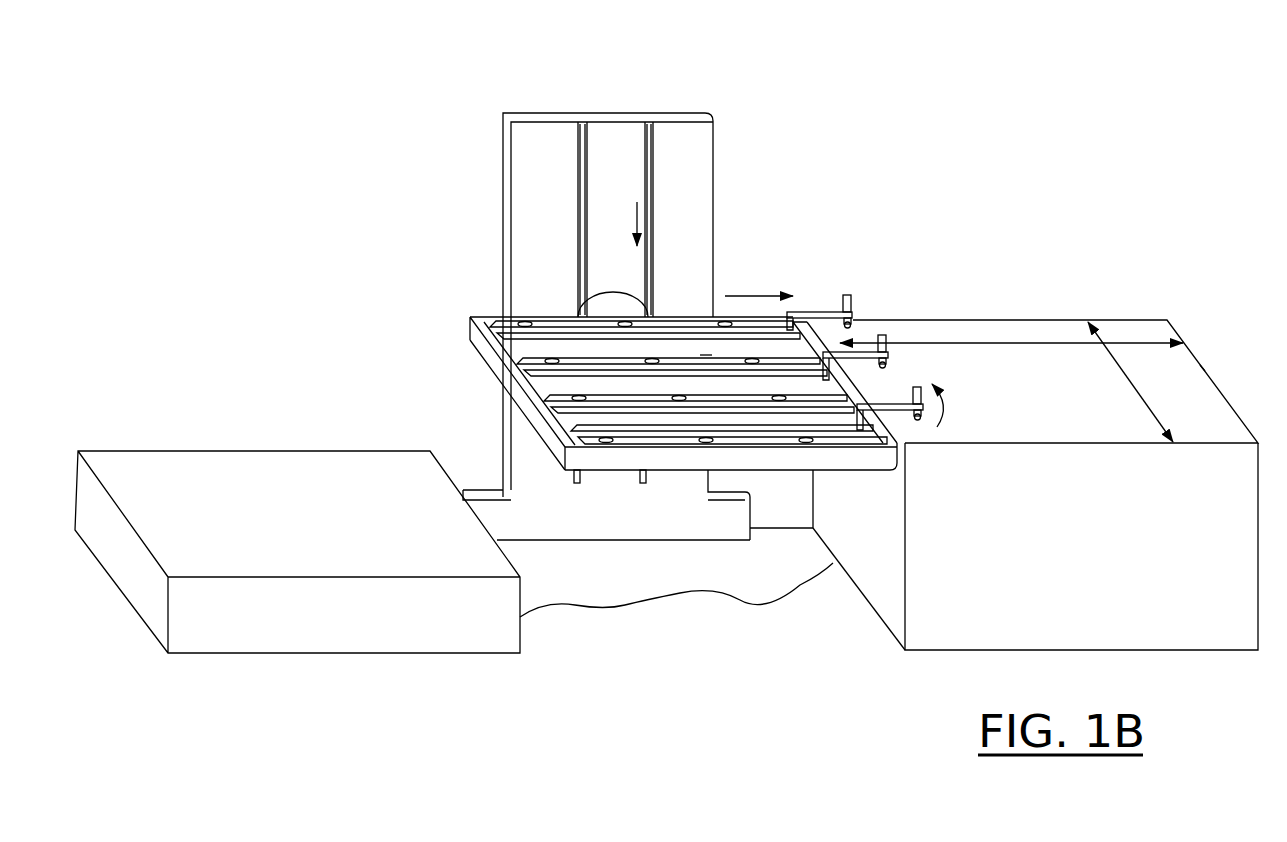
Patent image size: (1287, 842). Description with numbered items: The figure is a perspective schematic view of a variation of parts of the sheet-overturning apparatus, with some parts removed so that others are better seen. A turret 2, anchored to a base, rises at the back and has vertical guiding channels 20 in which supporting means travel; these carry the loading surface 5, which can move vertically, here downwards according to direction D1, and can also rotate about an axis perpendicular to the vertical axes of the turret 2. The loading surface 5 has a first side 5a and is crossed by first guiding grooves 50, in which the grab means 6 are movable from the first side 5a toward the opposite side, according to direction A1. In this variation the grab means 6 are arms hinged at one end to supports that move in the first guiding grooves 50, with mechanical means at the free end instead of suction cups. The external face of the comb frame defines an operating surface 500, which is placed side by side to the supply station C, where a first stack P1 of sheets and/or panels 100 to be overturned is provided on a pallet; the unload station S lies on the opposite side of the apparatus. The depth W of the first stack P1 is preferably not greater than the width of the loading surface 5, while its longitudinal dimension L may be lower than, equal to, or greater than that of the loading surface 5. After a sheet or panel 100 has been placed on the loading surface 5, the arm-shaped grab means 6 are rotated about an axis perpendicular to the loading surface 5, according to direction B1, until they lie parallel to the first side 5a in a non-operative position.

The turret 2 is at (638, 118).
The vertical guiding channel 20 is at (588, 140).
The loading surface 5 is at (483, 323).
The first side of loading surface 5a is at (484, 350).
The first guiding grooves 50 is at (470, 317).
The operating surface 500 is at (701, 356).
The grab means 6 is at (818, 300).
The sheet and/or panel 100 is at (970, 340).
The supply station C is at (1160, 273).
The unload station S is at (215, 311).
The first stack P1 is at (1205, 367).
The downwards vertical movement direction D1 is at (620, 212).
The direction of grab means movement A1 is at (759, 273).
The rotation direction of grab means B1 is at (957, 405).
The longitudinal dimension of first stack L is at (1011, 361).
The depth of first stack W is at (1130, 382).